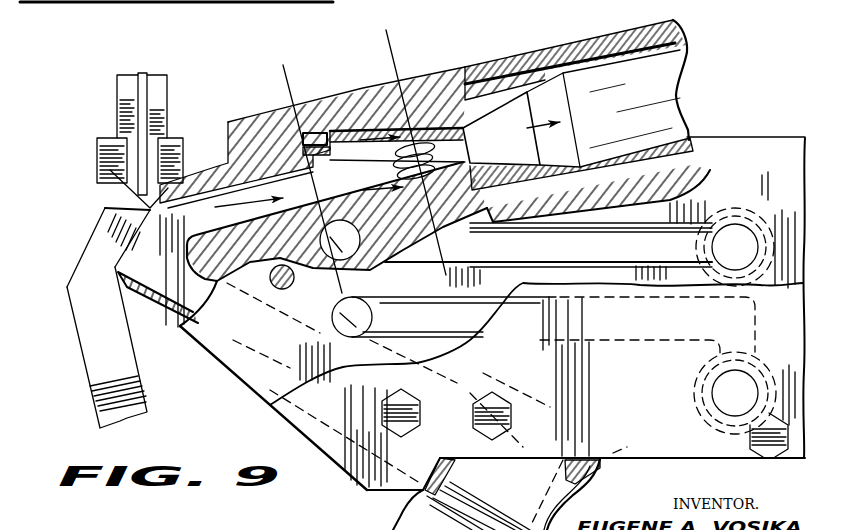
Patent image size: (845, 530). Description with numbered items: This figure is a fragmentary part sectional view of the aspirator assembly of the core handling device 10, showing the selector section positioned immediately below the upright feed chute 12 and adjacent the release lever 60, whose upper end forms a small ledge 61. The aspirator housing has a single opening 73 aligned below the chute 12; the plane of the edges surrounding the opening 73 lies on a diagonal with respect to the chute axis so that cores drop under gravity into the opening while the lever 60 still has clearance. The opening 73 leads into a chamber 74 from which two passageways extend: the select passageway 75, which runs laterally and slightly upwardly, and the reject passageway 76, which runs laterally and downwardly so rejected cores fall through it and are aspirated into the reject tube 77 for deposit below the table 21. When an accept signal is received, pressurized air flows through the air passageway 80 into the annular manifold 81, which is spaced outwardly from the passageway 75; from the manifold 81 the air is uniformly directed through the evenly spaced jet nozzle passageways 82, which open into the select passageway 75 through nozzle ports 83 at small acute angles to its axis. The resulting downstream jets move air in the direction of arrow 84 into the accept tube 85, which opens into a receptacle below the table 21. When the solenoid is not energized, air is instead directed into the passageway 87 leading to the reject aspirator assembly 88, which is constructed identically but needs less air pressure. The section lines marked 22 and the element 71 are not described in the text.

The table 21 is at (87, 2).
The feed chute 12 is at (167, 108).
The opening 73 is at (115, 180).
The select passageway 75 is at (212, 166).
The ledge 61 is at (125, 203).
The release lever 60 is at (85, 350).
The chamber 74 is at (153, 267).
The reject passageway 76 is at (207, 308).
The core handling device 10 is at (320, 70).
The section line 22- 22 is at (373, 43).
The annular manifold 81 is at (314, 133).
The jet nozzle passageways 82 is at (407, 130).
The collar 71 is at (460, 98).
The nozzle ports 83 is at (501, 128).
The arrow 84 is at (568, 136).
The accept tube 85 is at (600, 43).
The air passageway 80 is at (365, 252).
The passageway 87 is at (471, 273).
The reject aspirator assembly 88 is at (423, 492).
The reject tube 77 is at (580, 485).